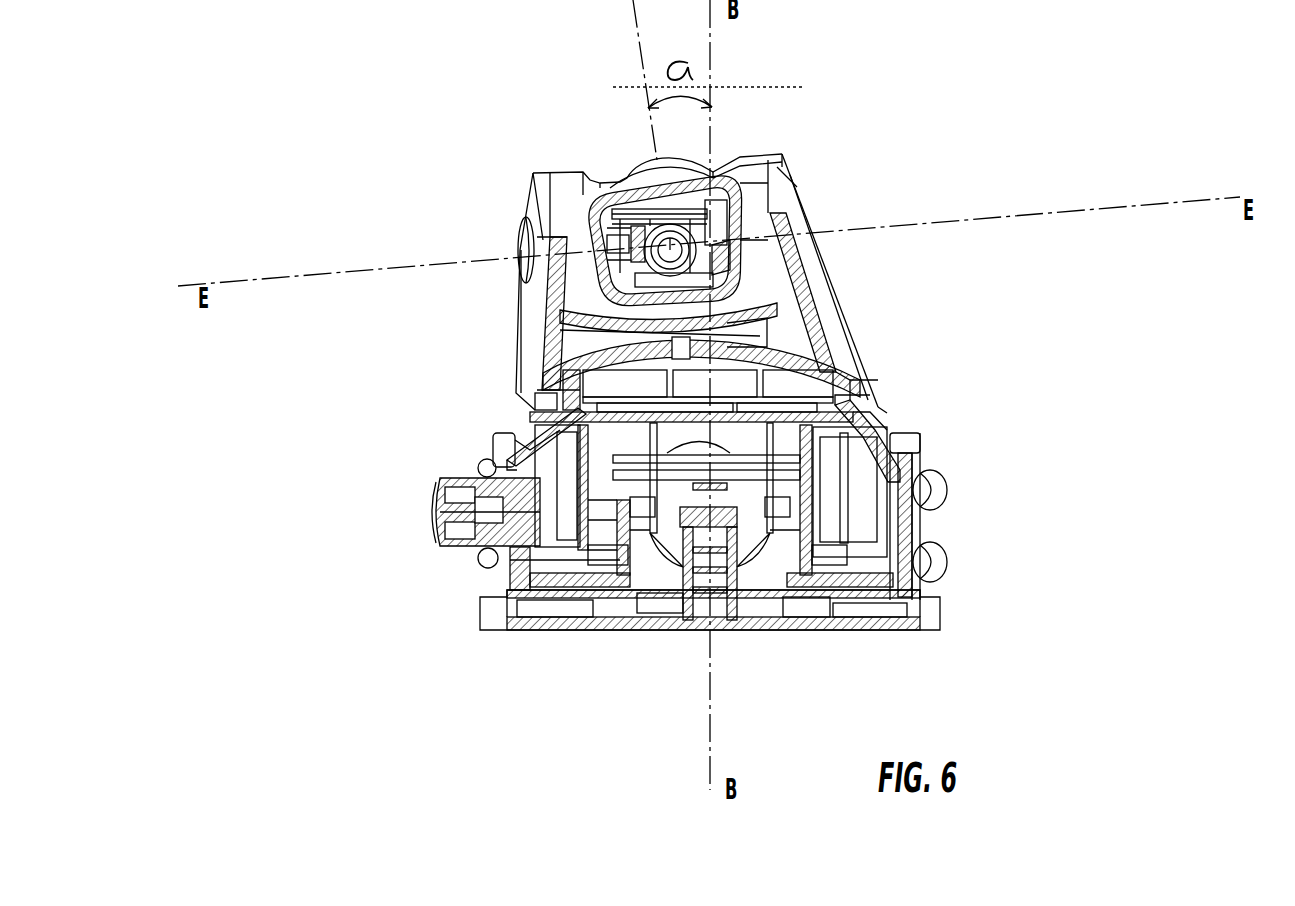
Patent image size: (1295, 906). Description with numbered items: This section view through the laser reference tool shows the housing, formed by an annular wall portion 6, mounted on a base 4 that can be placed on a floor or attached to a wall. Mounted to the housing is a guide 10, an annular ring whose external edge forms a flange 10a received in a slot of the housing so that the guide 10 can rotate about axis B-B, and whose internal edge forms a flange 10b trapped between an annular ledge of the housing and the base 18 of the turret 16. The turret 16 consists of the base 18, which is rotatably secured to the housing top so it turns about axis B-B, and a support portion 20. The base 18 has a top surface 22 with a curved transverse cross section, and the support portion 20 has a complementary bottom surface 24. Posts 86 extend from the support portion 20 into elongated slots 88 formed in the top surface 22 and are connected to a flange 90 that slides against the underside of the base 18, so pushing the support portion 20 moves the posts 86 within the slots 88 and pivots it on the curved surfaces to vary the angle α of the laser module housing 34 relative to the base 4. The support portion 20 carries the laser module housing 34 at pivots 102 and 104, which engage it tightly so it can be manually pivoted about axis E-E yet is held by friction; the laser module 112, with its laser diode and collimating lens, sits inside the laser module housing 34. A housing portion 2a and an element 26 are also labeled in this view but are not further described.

The connector foot 2a is at (578, 600).
The base 4 is at (937, 620).
The annular wall portion 6 is at (920, 530).
The guide 10 is at (890, 413).
The flange 10a is at (912, 453).
The flange 10b is at (880, 400).
The turret 16 is at (841, 150).
The base 18 is at (835, 365).
The support portion 20 is at (527, 300).
The top surface 22 is at (782, 333).
The bottom surface 24 is at (520, 397).
The spring 26 is at (545, 415).
The laser module housing 34 is at (755, 152).
The posts 86 is at (680, 370).
The elongated slots 88 is at (817, 247).
The flange 90 is at (617, 367).
The pivot 102 is at (810, 217).
The pivot 104 is at (521, 252).
The laser module 112 is at (668, 246).